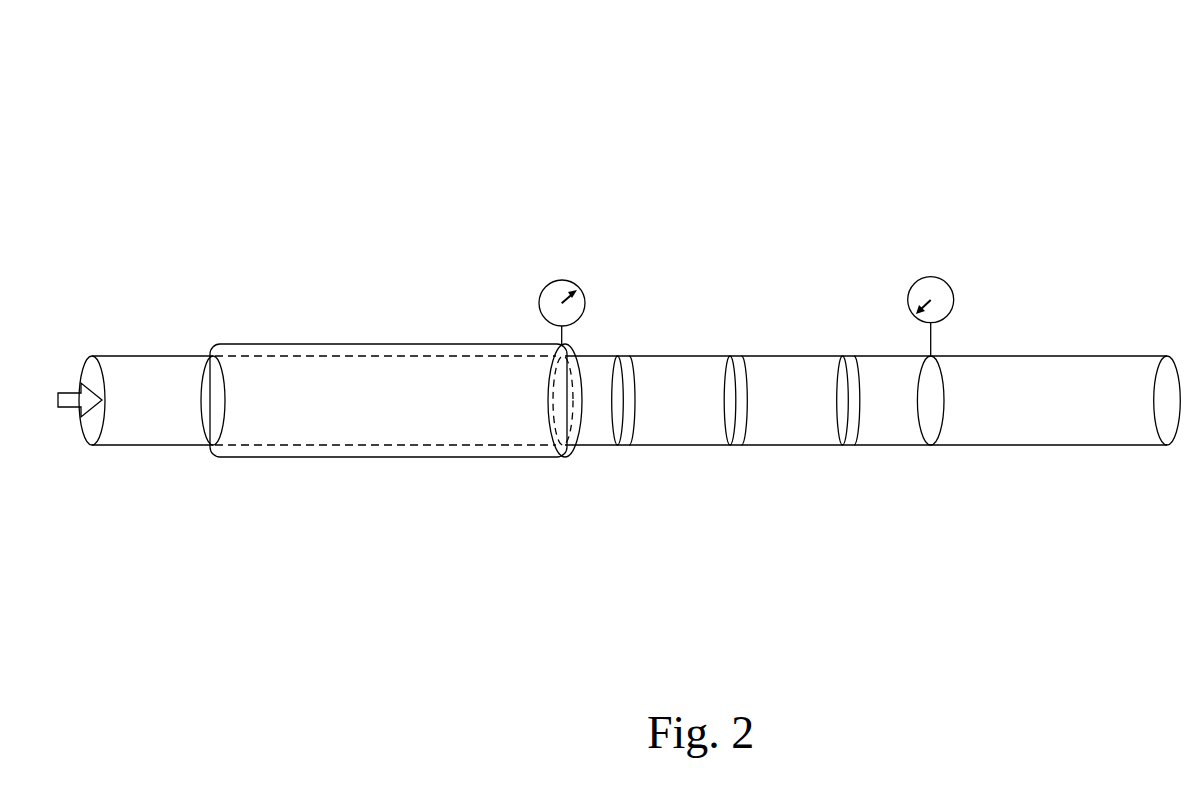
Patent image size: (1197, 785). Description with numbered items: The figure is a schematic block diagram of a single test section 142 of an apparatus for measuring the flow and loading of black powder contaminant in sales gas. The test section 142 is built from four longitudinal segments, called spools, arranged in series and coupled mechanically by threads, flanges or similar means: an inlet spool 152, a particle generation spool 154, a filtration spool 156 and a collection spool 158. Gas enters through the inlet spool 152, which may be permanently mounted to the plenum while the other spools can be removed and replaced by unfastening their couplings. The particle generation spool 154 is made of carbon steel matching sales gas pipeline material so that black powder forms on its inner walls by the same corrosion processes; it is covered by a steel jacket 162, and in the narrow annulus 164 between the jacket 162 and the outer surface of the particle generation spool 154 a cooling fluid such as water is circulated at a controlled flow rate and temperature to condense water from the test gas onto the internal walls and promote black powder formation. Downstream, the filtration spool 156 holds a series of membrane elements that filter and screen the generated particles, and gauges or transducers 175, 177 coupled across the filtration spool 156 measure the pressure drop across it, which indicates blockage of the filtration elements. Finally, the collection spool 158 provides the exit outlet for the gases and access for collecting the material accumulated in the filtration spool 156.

The test section 142 is at (411, 92).
The inlet spool 152 is at (132, 405).
The particle generation spool 154 is at (452, 387).
The filtration spool 156 is at (937, 473).
The collection spool 158 is at (1082, 407).
The jacket 162 is at (358, 457).
The annulus 164 is at (282, 452).
The gauge or transducer 175 is at (550, 282).
The gauge or transducer 177 is at (928, 275).